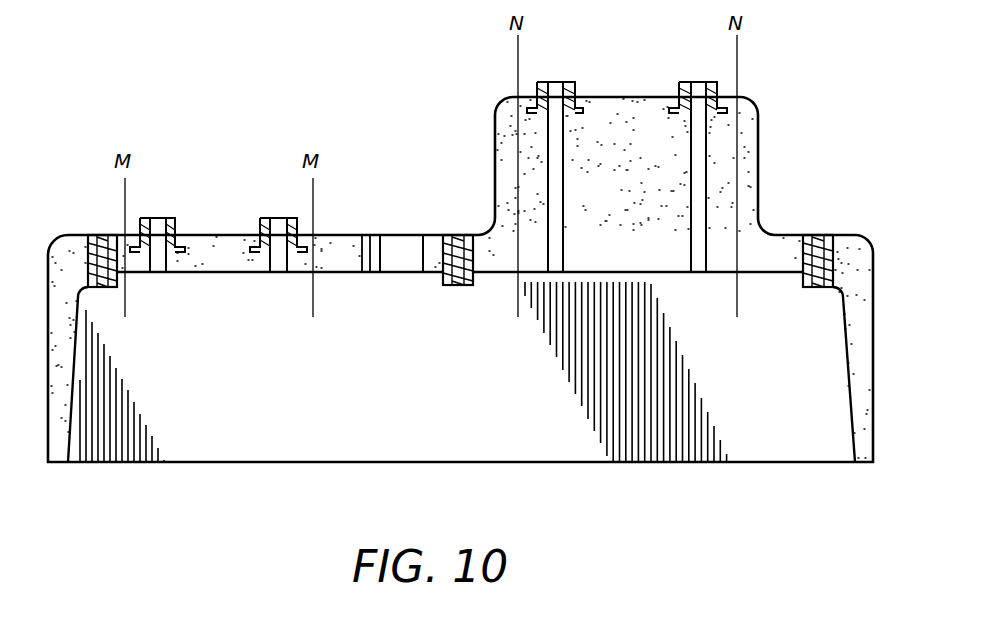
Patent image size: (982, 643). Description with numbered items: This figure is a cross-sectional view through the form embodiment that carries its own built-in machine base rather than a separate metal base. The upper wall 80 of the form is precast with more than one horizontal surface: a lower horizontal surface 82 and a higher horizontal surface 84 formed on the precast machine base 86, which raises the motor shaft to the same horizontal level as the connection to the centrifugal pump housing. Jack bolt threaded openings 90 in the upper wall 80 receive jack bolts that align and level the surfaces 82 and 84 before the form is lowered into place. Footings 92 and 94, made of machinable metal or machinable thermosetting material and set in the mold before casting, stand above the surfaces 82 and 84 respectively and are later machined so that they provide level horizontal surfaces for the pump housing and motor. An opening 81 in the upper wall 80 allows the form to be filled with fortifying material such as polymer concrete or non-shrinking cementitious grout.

The upper wall 80 is at (498, 228).
The opening 81 is at (420, 258).
The lower horizontal surface 82 is at (337, 248).
The higher horizontal surface 84 is at (622, 97).
The precast machine base 86 is at (758, 168).
The jack bolt threaded openings 90 is at (100, 235).
The footing 92 is at (267, 218).
The footing 94 is at (568, 82).